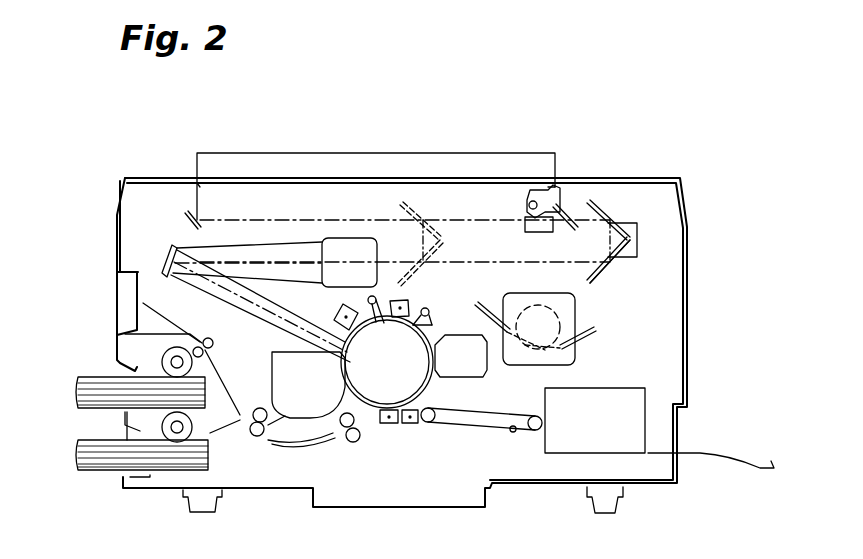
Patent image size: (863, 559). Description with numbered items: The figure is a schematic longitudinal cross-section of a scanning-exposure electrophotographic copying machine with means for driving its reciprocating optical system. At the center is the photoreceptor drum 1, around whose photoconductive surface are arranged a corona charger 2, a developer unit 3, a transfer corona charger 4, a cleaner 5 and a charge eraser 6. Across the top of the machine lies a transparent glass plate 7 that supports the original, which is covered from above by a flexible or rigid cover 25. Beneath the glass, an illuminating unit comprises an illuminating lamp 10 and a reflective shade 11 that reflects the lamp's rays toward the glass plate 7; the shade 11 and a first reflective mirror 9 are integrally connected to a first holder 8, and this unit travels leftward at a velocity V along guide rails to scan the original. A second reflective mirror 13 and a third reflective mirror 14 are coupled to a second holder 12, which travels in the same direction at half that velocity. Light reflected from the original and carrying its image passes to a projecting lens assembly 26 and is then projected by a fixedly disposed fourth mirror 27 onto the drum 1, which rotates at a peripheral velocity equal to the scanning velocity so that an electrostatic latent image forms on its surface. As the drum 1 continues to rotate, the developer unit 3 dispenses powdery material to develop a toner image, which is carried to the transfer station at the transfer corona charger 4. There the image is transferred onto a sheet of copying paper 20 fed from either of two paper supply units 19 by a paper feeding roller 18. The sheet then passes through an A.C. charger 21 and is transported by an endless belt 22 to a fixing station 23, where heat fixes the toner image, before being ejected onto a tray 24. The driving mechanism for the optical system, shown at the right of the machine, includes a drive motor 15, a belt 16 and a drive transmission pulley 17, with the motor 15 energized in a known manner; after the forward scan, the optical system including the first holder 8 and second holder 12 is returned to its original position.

The photoreceptor drum 1 is at (396, 378).
The corona charger 2 is at (348, 305).
The developer unit 3 is at (315, 398).
The transfer corona charger 4 is at (380, 428).
The cleaner 5 is at (470, 372).
The charge eraser 6 is at (428, 316).
The transparent glass plate 7 is at (549, 186).
The first holder 8 is at (525, 224).
The first reflective mirror 9 is at (560, 230).
The illuminating lamp 10 is at (528, 206).
The reflective shade 11 is at (540, 187).
The second holder 12 is at (637, 240).
The second reflective mirror 13 is at (610, 213).
The third reflective mirror 14 is at (612, 264).
The drive motor 15 is at (573, 300).
The belt 16 is at (583, 335).
The drive transmission pulley 17 is at (572, 324).
The paper feeding roller 18 is at (160, 357).
The paper supply units 19 is at (212, 350).
The sheet of copying paper 20 is at (107, 393).
The A.C. charger 21 is at (412, 426).
The endless belt 22 is at (472, 428).
The fixing station 23 is at (614, 438).
The tray 24 is at (760, 460).
The cover 25 is at (347, 155).
The projecting lens assembly 26 is at (355, 238).
The fourth mirror 27 is at (163, 263).